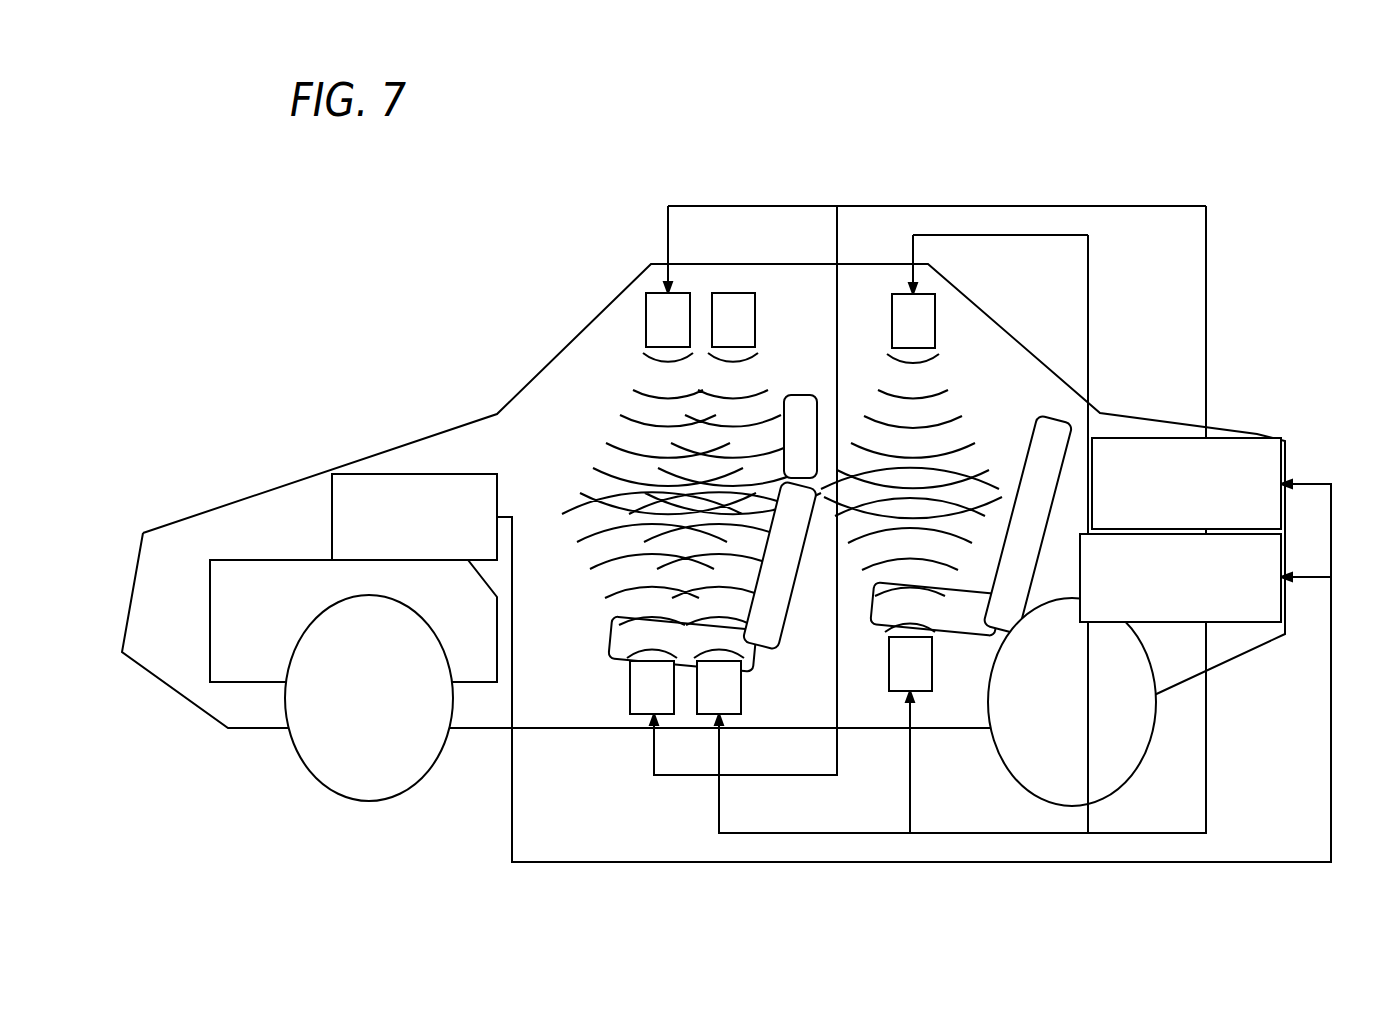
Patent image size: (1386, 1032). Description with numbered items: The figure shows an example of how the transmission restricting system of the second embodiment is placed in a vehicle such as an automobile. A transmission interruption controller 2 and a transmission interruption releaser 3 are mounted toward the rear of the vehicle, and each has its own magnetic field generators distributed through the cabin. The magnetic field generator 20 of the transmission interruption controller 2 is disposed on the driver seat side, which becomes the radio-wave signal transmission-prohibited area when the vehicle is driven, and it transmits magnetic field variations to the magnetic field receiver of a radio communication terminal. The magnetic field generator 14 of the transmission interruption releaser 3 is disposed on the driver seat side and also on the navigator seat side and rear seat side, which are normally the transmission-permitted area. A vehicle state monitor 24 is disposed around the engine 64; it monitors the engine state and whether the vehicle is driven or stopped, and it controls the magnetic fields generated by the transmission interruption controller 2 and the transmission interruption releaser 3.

The magnetic field generator 14 is at (893, 294).
The magnetic field generator 20 is at (646, 317).
The vehicle state monitor 24 is at (364, 474).
The engine 64 is at (237, 560).
The transmission interruption controller 2 is at (1213, 438).
The transmission interruption releaser 3 is at (1251, 622).